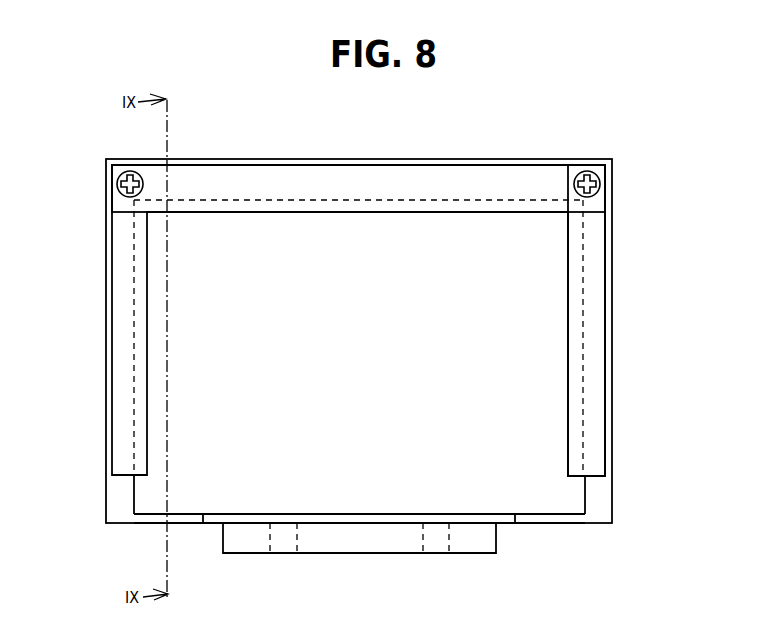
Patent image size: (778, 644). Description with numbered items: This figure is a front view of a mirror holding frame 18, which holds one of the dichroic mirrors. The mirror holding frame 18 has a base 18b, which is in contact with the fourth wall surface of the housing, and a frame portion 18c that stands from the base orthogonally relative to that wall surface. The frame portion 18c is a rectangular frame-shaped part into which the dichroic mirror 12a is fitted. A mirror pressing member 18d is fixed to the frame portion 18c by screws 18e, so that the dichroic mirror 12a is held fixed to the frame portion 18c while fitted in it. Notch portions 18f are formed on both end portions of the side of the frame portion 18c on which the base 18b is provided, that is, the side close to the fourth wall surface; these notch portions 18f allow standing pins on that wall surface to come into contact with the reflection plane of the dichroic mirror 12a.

The dichroic mirror 12a is at (612, 509).
The mirror holding frame 18 is at (105, 312).
The base 18b is at (497, 538).
The frame portion 18c is at (606, 352).
The mirror pressing member 18d is at (462, 165).
The screws 18e is at (124, 172).
The notch portions 18f is at (155, 523).